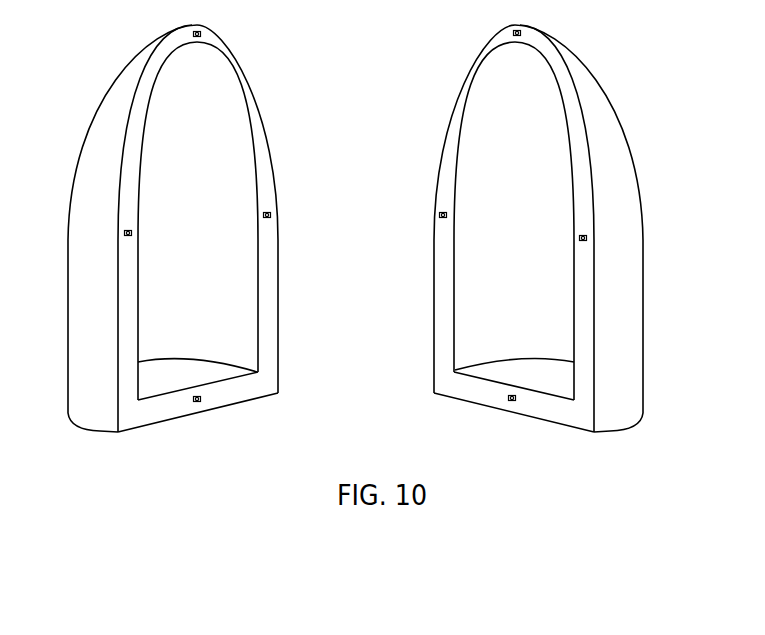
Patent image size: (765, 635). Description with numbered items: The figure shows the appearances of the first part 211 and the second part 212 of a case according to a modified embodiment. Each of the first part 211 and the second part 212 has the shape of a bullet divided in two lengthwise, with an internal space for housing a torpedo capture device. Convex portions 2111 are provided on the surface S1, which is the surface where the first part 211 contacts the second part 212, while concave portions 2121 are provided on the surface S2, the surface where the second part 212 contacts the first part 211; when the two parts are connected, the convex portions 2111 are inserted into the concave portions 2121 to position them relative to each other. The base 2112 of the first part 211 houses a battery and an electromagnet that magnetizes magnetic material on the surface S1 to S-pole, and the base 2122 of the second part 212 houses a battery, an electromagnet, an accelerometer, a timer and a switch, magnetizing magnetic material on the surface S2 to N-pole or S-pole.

The first part 211 is at (102, 107).
The convex portions 2111 is at (270, 211).
The base 2112 is at (163, 372).
The second part 212 is at (608, 107).
The concave portions 2121 is at (442, 209).
The base 2122 is at (547, 372).
The surface S1 is at (254, 117).
The surface S2 is at (458, 117).